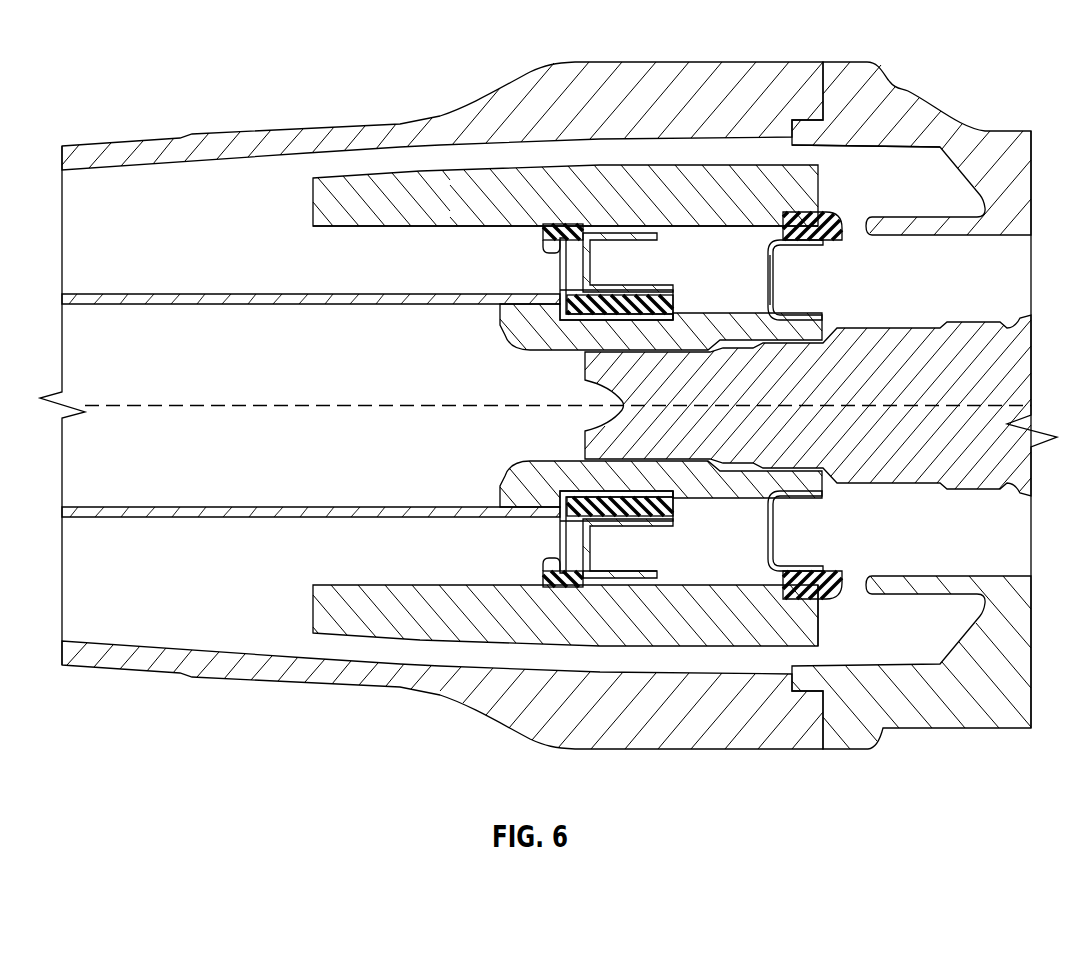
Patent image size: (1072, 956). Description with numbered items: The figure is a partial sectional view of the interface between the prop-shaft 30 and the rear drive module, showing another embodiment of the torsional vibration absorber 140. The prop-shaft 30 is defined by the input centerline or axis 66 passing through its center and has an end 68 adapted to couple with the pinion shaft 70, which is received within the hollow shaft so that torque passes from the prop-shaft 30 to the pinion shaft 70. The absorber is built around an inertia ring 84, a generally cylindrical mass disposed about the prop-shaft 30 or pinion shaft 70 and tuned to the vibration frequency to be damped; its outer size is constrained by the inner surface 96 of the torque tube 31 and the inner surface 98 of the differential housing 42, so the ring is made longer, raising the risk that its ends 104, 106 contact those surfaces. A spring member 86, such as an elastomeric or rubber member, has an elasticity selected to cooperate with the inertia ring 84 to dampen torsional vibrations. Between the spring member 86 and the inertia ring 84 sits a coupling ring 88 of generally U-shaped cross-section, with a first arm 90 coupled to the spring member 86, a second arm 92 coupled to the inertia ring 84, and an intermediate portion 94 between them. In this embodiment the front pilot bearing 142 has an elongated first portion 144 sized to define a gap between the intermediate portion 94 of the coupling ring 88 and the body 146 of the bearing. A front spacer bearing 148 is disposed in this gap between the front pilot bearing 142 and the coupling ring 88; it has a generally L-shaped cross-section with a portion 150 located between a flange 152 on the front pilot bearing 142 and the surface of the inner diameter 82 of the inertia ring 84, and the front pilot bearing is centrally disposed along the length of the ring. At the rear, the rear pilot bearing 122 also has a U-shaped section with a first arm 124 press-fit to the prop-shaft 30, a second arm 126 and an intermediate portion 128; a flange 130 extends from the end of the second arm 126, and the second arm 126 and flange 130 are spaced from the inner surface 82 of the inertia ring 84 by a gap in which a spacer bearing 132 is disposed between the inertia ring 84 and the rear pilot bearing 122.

The torque tube 31 is at (194, 135).
The torsional vibration absorber 140 is at (327, 166).
The differential housing 42 is at (923, 100).
The inner surface 98 is at (838, 148).
The inertia ring 84 is at (310, 202).
The inner diameter 82 is at (378, 230).
The front spacer bearing 148 is at (543, 232).
The flange 152 is at (545, 243).
The body 146 is at (558, 265).
The first arm 90 is at (600, 284).
The rear pilot bearing 122 is at (766, 272).
The flange 130 is at (845, 213).
The intermediate portion 128 is at (782, 282).
The first arm 124 is at (797, 312).
The prop-shaft 30 is at (100, 293).
The pinion shaft 70 is at (965, 320).
The axis 66 is at (110, 404).
The front pilot bearing 142 is at (558, 329).
The elongated first portion 144 is at (676, 316).
The end 68 is at (826, 490).
The spring member 86 is at (676, 505).
The intermediate portion 94 is at (597, 535).
The second arm 92 is at (658, 578).
The spacer bearing 132 is at (766, 540).
The second arm 126 is at (802, 560).
The portion 150 is at (543, 575).
The coupling ring 88 is at (573, 580).
The inner surface 96 is at (96, 641).
The end 104 is at (310, 612).
The end 106 is at (823, 627).